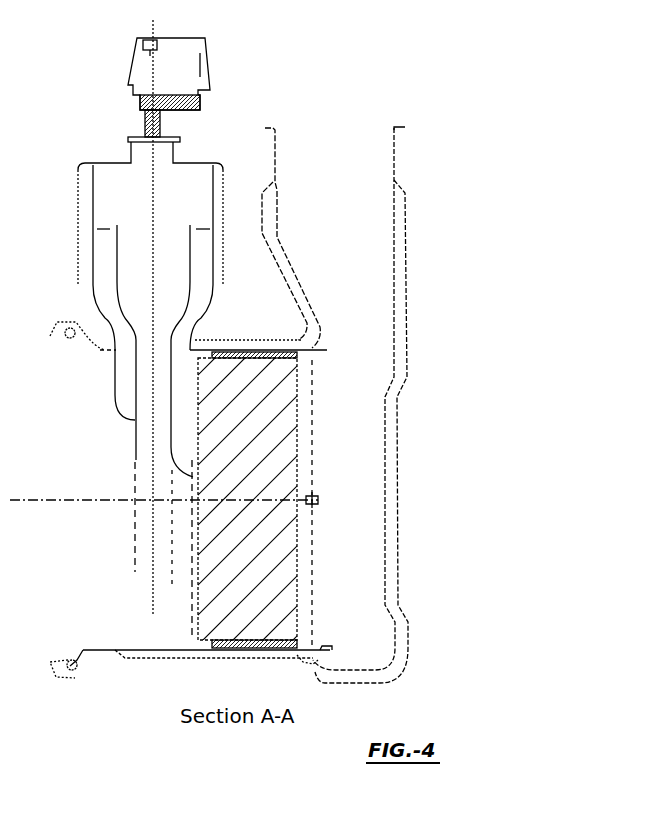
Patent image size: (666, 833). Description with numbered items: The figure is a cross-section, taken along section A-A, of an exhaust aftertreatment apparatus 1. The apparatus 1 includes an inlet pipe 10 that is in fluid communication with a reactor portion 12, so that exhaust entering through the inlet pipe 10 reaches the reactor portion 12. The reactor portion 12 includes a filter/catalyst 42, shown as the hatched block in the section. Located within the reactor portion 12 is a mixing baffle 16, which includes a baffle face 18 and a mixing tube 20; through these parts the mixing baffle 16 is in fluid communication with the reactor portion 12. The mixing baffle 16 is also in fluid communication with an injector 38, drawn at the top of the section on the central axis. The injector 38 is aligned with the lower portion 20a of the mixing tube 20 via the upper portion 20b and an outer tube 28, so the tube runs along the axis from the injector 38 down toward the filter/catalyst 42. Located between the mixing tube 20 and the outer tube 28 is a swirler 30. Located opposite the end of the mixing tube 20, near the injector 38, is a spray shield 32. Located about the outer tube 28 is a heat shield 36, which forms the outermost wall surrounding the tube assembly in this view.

The apparatus 1 is at (335, 105).
The inlet pipe 10 is at (350, 195).
The reactor portion 12 is at (320, 765).
The mixing baffle 16 is at (150, 560).
The baffle face 18 is at (188, 605).
The mixing tube 20 is at (102, 499).
The lower portion 20a is at (155, 480).
The upper portion 20b is at (135, 388).
The outer tube 28 is at (93, 270).
The swirler 30 is at (198, 222).
The spray shield 32 is at (130, 172).
The heat shield 36 is at (76, 213).
The injector 38 is at (137, 80).
The filter/catalyst 42 is at (265, 430).